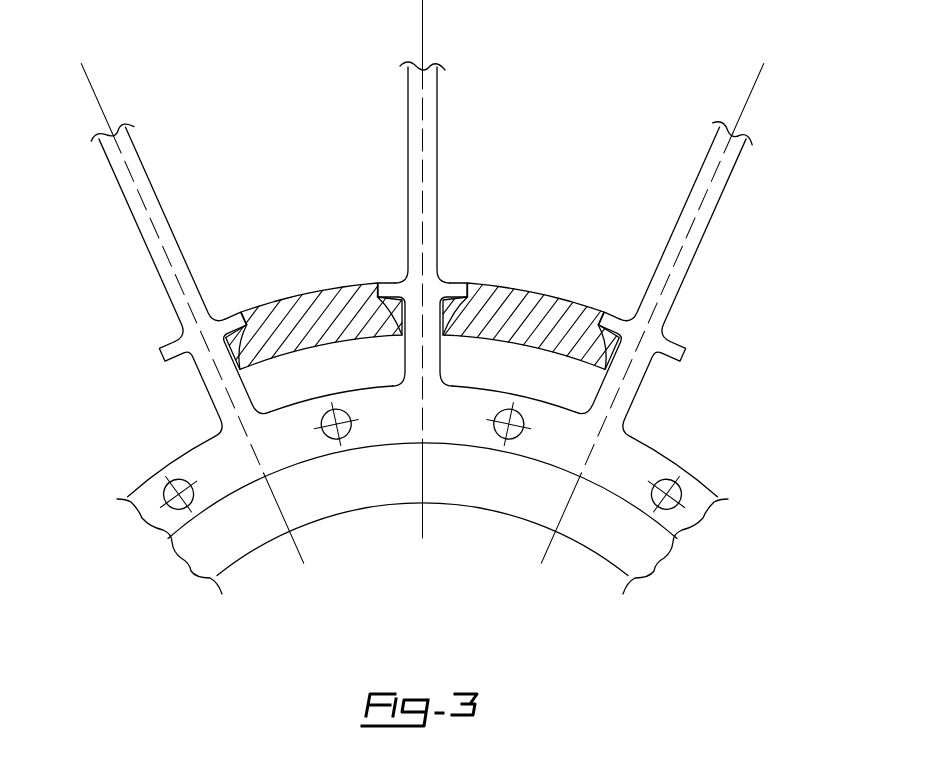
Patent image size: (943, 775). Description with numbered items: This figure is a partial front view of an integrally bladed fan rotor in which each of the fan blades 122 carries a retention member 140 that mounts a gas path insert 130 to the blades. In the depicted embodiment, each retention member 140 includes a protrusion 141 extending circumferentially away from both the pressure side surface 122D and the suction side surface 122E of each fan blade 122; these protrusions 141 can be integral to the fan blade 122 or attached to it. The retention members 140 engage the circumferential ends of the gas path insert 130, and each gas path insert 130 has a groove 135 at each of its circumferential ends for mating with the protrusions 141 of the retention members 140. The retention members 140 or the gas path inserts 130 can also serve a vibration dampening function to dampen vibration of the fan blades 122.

The fan blade 122 is at (441, 201).
The pressure side surface 122D is at (437, 162).
The suction side surface 122E is at (408, 143).
The gas path insert 130 is at (531, 302).
The groove 135 is at (258, 342).
The retention member 140 is at (391, 268).
The protrusion 141 is at (448, 282).